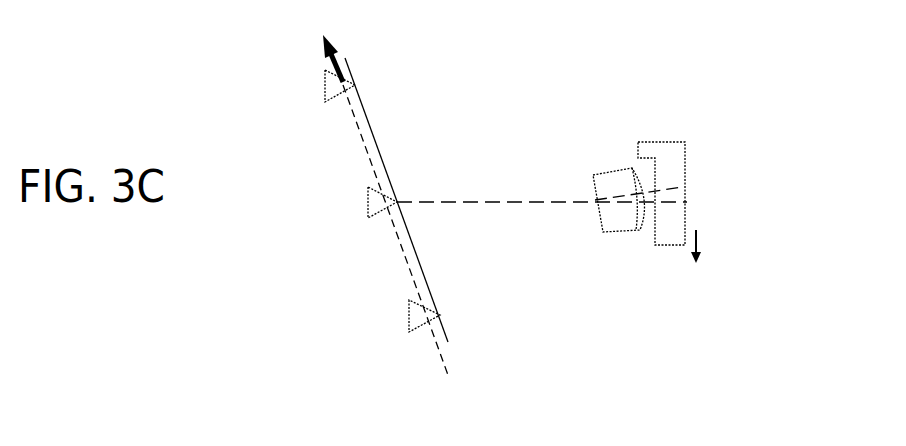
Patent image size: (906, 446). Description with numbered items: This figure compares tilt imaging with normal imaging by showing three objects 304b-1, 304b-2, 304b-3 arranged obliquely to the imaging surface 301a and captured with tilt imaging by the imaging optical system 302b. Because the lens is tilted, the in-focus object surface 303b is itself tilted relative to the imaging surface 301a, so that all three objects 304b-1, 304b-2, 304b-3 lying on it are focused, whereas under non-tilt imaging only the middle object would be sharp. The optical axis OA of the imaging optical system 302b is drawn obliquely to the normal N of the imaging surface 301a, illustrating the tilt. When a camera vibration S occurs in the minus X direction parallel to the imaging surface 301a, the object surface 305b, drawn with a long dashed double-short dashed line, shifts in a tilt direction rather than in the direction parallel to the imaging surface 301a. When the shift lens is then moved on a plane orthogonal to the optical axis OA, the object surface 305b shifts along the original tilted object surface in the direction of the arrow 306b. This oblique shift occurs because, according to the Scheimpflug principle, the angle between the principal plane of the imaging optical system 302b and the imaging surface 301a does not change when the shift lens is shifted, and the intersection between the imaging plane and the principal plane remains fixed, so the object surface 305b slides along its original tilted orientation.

The imaging surface 301a is at (686, 198).
The imaging optical system 302b is at (615, 182).
The in-focus object surface 303b is at (396, 184).
The object 304b-1 is at (325, 80).
The object 304b-2 is at (368, 199).
The object 304b-3 is at (409, 313).
The object surface 305b is at (448, 364).
The arrow 306b is at (340, 47).
The normal N is at (510, 203).
The optical axis OA is at (637, 185).
The camera vibration S is at (705, 248).